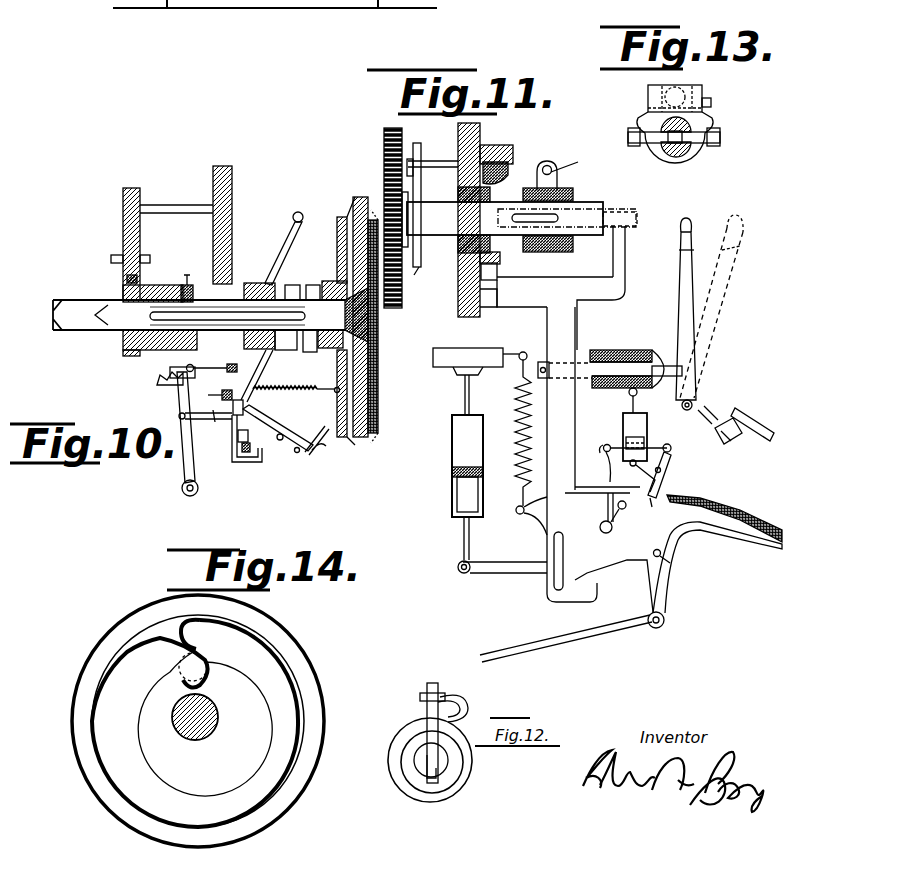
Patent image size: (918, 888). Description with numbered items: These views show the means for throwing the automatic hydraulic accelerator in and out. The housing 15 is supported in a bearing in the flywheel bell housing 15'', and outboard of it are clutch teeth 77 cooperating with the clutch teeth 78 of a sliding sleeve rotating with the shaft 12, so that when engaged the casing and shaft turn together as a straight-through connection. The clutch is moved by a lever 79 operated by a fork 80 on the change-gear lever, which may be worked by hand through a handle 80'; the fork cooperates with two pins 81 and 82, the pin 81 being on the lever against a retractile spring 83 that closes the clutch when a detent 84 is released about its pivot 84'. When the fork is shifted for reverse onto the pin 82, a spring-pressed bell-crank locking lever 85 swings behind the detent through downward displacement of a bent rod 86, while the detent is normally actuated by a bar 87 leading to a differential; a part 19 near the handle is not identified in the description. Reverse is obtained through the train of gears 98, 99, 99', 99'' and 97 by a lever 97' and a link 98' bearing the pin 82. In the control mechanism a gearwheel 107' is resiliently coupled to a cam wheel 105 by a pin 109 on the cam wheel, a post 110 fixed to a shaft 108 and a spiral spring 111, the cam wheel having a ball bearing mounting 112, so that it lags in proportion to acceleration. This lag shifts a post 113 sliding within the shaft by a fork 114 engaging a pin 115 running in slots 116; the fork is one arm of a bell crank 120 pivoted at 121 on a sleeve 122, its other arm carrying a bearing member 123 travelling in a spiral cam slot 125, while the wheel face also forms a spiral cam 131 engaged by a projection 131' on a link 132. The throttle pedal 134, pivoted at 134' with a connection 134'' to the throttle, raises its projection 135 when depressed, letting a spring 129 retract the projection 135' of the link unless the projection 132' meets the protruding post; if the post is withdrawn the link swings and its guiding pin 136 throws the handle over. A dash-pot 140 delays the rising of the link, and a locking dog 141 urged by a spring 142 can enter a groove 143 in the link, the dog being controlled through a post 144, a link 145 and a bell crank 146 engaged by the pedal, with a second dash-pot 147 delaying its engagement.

In FIG. 10, the shaft 12 is at (74, 333).
In FIG. 10, the housing 15 is at (350, 313).
In FIG. 10, the flywheel bell housing 15'' is at (371, 337).
In FIG. 11, the arm 19 is at (750, 422).
In FIG. 10, the clutch teeth 77 is at (329, 350).
In FIG. 10, the clutch teeth 78 is at (292, 350).
In FIG. 10, the lever 79 is at (289, 244).
In FIG. 10, the fork 80 is at (212, 377).
In FIG. 11, the fork 80 is at (728, 447).
In FIG. 11, the handle 80' is at (711, 306).
In FIG. 10, the pin 81 is at (210, 398).
In FIG. 11, the pin 81 is at (714, 406).
In FIG. 10, the pin 82 is at (196, 431).
In FIG. 10, the retractile spring 83 is at (296, 382).
In FIG. 10, the detent 84 is at (278, 428).
In FIG. 10, the pivot 84' is at (267, 455).
In FIG. 10, the locking lever 85 is at (253, 406).
In FIG. 10, the bent rod 86 is at (252, 463).
In FIG. 10, the bar 87 is at (321, 457).
In FIG. 10, the reverse train gear 97 is at (140, 305).
In FIG. 10, the lever 97' is at (150, 387).
In FIG. 10, the gear 98 is at (186, 278).
In FIG. 10, the link 98' is at (205, 428).
In FIG. 10, the gear 99 is at (240, 316).
In FIG. 10, the reverse train element 99' is at (144, 244).
In FIG. 10, the reverse train element 99'' is at (186, 225).
In FIG. 11, the cam wheel 105 is at (479, 130).
In FIG. 14, the cam wheel 105 is at (100, 639).
In FIG. 11, the gearwheel 107' is at (370, 217).
In FIG. 11, the shaft 108 is at (522, 218).
In FIG. 13, the shaft 108 is at (682, 148).
In FIG. 14, the shaft 108 is at (204, 730).
In FIG. 12, the shaft 108 is at (418, 762).
In FIG. 11, the pin 109 is at (424, 163).
In FIG. 11, the post 110 is at (426, 174).
In FIG. 12, the post 110 is at (432, 683).
In FIG. 11, the spiral spring 111 is at (422, 281).
In FIG. 12, the spiral spring 111 is at (457, 707).
In FIG. 11, the ball bearing mounting 112 is at (458, 250).
In FIG. 11, the central post 113 is at (616, 218).
In FIG. 13, the fork 114 is at (713, 117).
In FIG. 13, the pin 115 is at (721, 138).
In FIG. 11, the slots 116 is at (560, 223).
In FIG. 13, the slots 116 is at (650, 128).
In FIG. 11, the bell crank 120 is at (541, 160).
In FIG. 11, the pivot 121 is at (580, 161).
In FIG. 11, the sleeve 122 is at (571, 191).
In FIG. 11, the bearing member 123 is at (517, 162).
In FIG. 14, the spiral cam slot 125 is at (278, 676).
In FIG. 11, the spring 129 is at (514, 398).
In FIG. 11, the spiral cam 131 is at (514, 269).
In FIG. 11, the projection 131' is at (500, 313).
In FIG. 11, the link 132 is at (555, 292).
In FIG. 11, the projection 132' is at (663, 314).
In FIG. 11, the throttle pedal 134 is at (724, 517).
In FIG. 11, the pivot 134' is at (715, 575).
In FIG. 11, the connection 134'' is at (566, 646).
In FIG. 11, the projection 135 is at (614, 586).
In FIG. 11, the projection 135' is at (530, 469).
In FIG. 11, the guiding pin 136 is at (578, 315).
In FIG. 11, the dash-pot 140 is at (452, 490).
In FIG. 11, the locking pawl 141 is at (583, 487).
In FIG. 11, the spring 142 is at (601, 513).
In FIG. 11, the groove 143 is at (547, 516).
In FIG. 11, the post 144 is at (597, 453).
In FIG. 11, the link 145 is at (668, 482).
In FIG. 11, the bell crank 146 is at (674, 450).
In FIG. 11, the dash-pot 147 is at (649, 426).